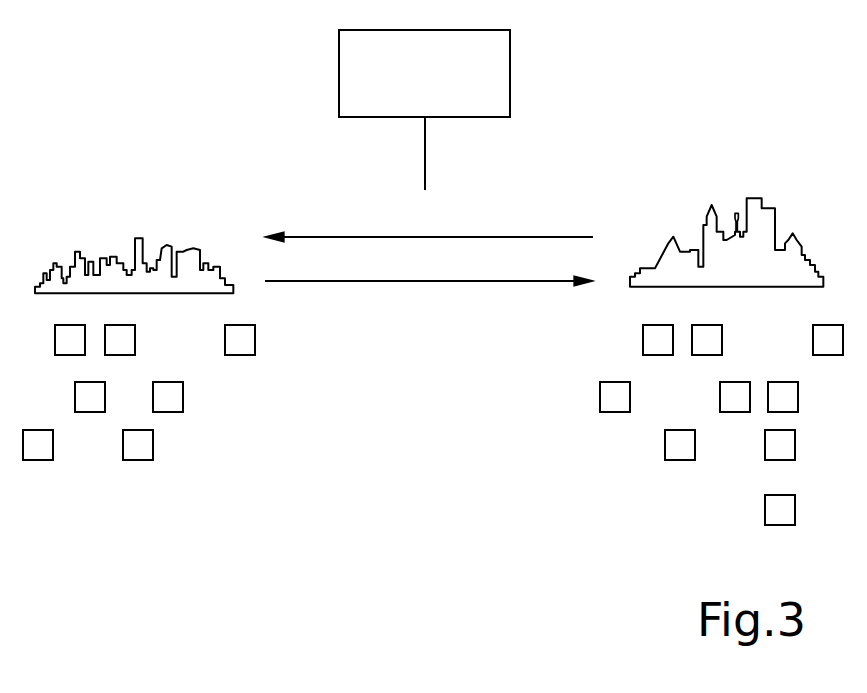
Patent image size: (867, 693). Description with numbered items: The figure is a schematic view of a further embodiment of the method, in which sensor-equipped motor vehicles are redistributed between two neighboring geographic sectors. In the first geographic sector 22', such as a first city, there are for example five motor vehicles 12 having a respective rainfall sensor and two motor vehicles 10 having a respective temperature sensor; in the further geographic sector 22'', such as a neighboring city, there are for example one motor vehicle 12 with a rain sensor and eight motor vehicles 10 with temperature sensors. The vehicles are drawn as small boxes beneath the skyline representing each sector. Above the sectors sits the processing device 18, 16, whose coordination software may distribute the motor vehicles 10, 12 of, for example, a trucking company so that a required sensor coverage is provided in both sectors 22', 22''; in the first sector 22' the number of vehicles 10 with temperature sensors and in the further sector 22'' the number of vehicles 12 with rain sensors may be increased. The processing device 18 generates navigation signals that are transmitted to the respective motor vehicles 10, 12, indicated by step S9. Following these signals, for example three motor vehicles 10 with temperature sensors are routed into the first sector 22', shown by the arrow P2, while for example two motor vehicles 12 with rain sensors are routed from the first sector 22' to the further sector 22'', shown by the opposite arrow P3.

The motor vehicle having a temperature sensor 10 is at (135, 340).
The motor vehicle having a rain sensor 12 is at (70, 355).
The server 16 is at (510, 65).
The processing device 18 is at (489, 73).
The first geographic sector 22' is at (134, 225).
The further geographic sector 22'' is at (726, 221).
The transmission of navigation signals S9 is at (425, 155).
The routing of temperature-sensor vehicles P2 is at (555, 237).
The routing of rain-sensor vehicles P3 is at (462, 281).